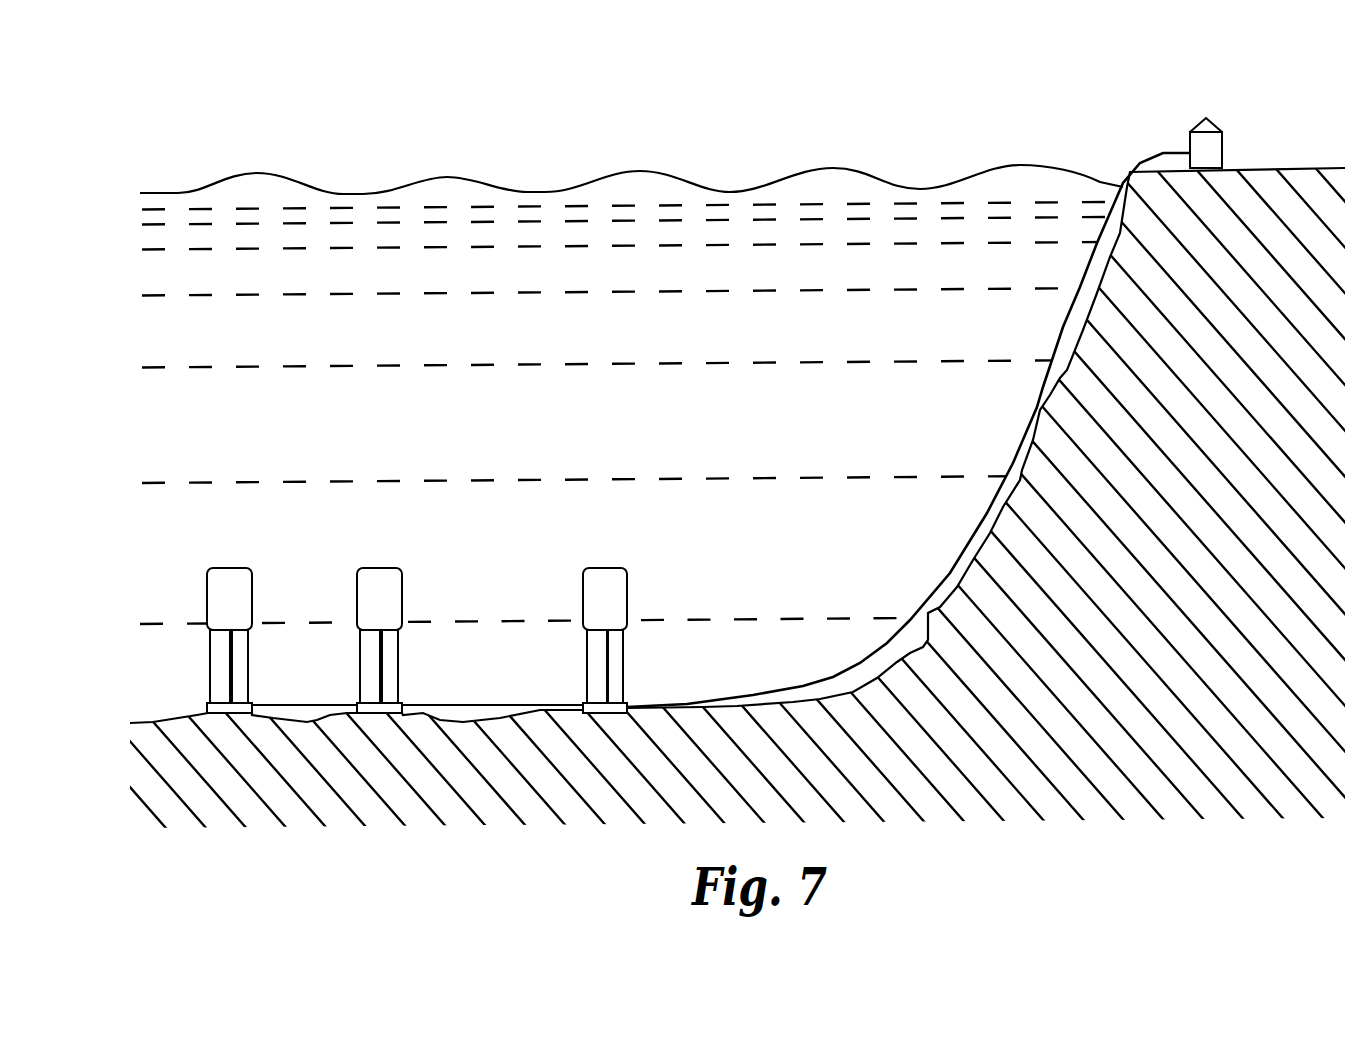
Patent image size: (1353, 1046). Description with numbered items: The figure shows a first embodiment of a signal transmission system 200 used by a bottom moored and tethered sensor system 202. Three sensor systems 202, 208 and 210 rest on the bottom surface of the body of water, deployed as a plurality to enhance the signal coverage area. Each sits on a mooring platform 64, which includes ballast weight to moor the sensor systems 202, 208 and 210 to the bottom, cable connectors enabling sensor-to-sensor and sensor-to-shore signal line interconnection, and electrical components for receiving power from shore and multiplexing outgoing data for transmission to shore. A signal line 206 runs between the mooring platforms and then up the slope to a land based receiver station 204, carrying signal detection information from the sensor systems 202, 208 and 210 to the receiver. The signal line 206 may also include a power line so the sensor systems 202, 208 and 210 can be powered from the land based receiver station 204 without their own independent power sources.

The signal transmission system 200 is at (410, 94).
The bottom moored and tethered sensor system 202 is at (628, 583).
The land based receiver station 204 is at (1219, 127).
The signal line 206 is at (962, 556).
The sensor system 208 is at (253, 583).
The sensor system 210 is at (403, 583).
The mooring platform 64 is at (250, 703).